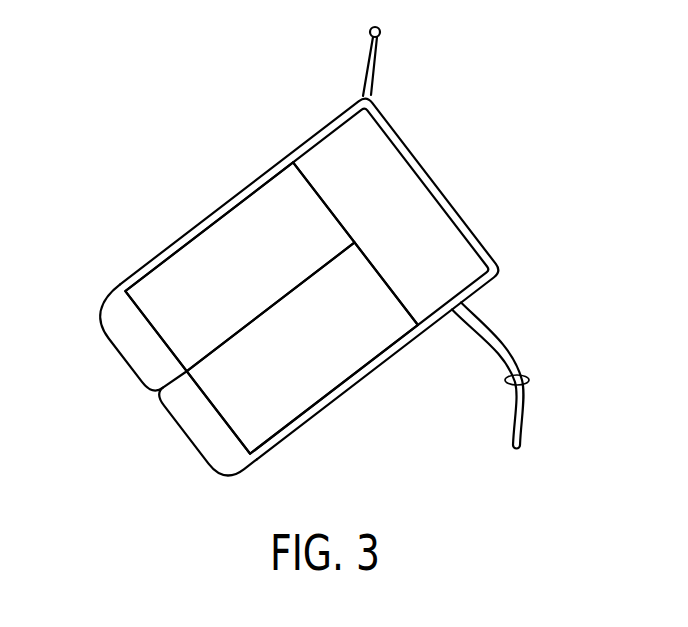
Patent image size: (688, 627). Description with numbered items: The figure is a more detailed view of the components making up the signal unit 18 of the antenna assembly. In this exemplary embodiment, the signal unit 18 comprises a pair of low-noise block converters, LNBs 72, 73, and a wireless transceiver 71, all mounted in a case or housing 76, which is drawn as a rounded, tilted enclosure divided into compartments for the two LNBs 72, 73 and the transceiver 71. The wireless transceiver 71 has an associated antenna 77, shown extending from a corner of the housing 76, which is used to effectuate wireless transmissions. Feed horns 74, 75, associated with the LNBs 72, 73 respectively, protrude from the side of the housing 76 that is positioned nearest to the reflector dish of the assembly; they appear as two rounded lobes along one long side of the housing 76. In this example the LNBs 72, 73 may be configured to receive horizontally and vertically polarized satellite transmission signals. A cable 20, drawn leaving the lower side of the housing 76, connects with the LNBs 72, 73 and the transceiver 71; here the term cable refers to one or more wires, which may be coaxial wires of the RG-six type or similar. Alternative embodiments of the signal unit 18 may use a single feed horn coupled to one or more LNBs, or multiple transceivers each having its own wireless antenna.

The signal unit 18 is at (301, 98).
The cable 20 is at (529, 379).
The wireless transceiver 71 is at (448, 247).
The low-noise block converter 72 is at (347, 365).
The low-noise block converter 73 is at (230, 226).
The feed horn 74 is at (207, 453).
The feed horn 75 is at (141, 368).
The housing 76 is at (412, 145).
The antenna 77 is at (377, 67).